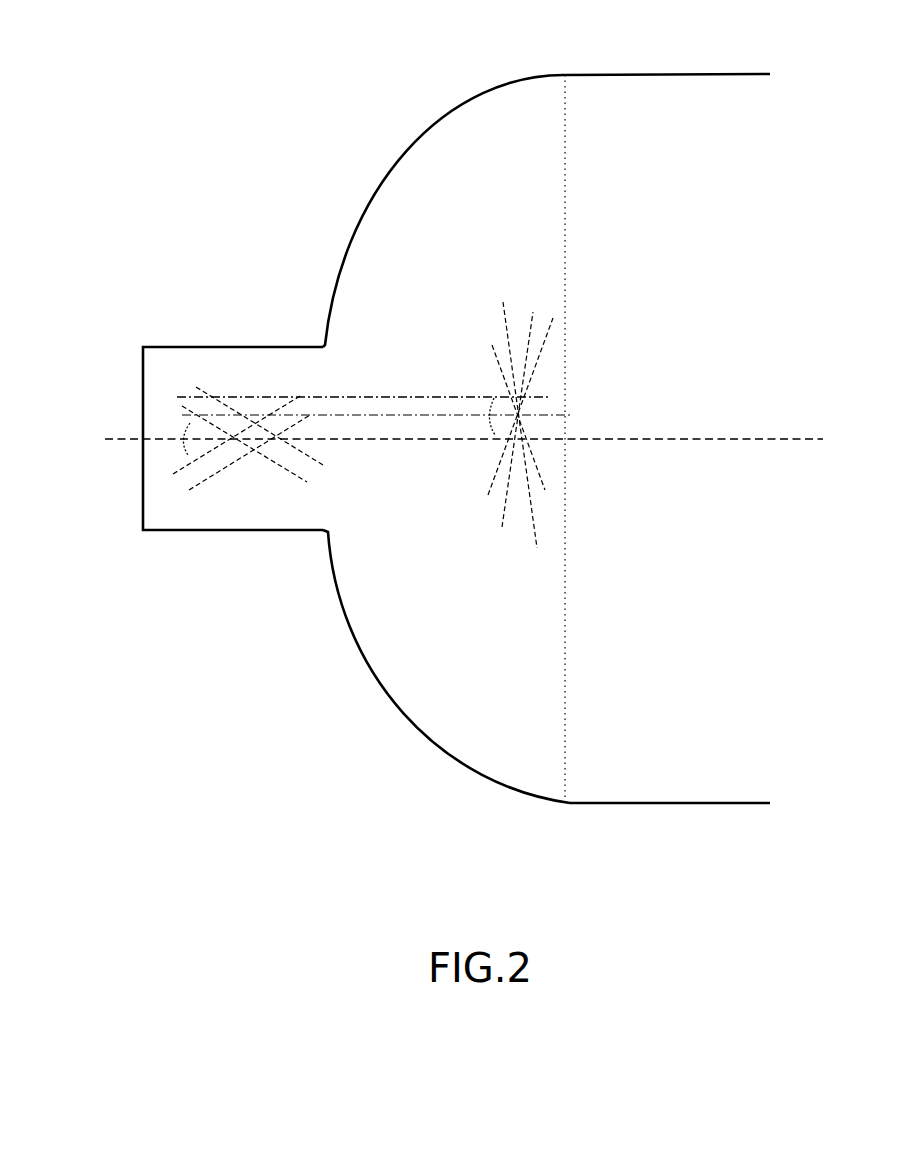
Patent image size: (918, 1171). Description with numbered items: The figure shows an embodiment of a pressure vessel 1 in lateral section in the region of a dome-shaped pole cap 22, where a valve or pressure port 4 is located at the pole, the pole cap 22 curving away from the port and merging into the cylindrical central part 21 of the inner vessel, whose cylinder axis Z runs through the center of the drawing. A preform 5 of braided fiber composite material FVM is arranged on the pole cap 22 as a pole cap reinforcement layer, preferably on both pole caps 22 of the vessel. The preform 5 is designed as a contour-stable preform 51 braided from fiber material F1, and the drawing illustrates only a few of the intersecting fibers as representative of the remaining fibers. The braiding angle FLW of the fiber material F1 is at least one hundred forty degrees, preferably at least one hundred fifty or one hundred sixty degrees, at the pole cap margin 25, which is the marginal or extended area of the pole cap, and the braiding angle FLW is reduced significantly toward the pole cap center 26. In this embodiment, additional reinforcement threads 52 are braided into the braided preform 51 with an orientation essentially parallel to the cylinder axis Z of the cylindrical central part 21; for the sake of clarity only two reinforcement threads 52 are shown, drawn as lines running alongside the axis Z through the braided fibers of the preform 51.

The pressure vessel 1 is at (258, 137).
The valve/pressure port 4 is at (197, 533).
The marginal area of the pole cap 25 is at (465, 91).
The pole cap center 26 is at (324, 312).
The dome-shaped pole cap of the inner vessel 22 is at (382, 696).
The cylindrical central part of the inner vessel 21 is at (653, 788).
The reinforcement threads for meshwork 52 is at (374, 413).
The contour-stable preform 5 is at (248, 517).
The contour-stable preform braided from fiber material 51 is at (248, 517).
The fiber material of the pole cap reinforcement layer F1 is at (245, 479).
The fiber composite material FVM is at (520, 299).
The braiding angle in the pole cap reinforcement layer FLW is at (178, 430).
The cylinder axis of the cylindrical central part Z is at (397, 446).